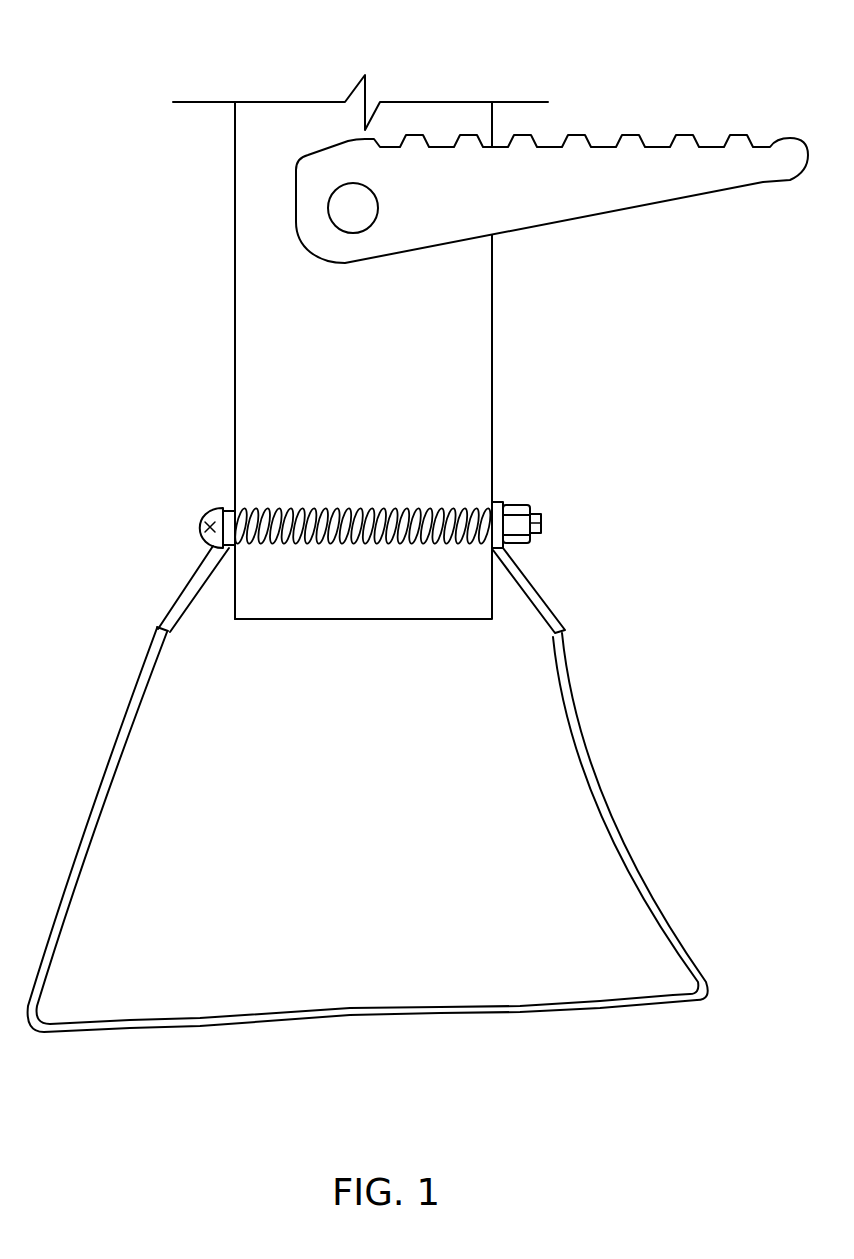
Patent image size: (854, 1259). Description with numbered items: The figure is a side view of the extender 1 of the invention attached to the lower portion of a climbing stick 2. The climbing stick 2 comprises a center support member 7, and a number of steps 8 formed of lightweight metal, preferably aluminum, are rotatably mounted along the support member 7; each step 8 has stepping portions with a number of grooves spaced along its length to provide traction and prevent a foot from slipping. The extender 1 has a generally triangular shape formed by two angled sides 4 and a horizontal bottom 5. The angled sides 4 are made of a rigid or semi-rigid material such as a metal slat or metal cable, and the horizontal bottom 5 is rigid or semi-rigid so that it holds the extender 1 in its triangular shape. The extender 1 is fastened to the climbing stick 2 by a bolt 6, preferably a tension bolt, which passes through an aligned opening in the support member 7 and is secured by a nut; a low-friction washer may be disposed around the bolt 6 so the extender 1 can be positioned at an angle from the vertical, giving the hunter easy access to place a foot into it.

The extender 1 is at (368, 830).
The climbing stick 2 is at (235, 342).
The angled sides 4 is at (110, 830).
The horizontal bottom 5 is at (412, 1001).
The bolt 6 is at (547, 518).
The center support member 7 is at (499, 298).
The steps 8 is at (753, 115).